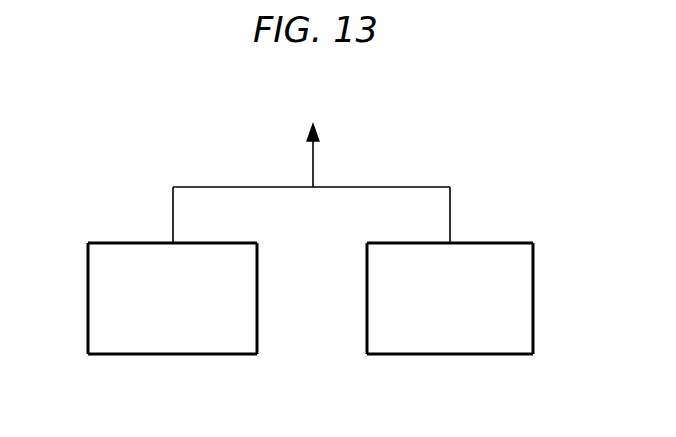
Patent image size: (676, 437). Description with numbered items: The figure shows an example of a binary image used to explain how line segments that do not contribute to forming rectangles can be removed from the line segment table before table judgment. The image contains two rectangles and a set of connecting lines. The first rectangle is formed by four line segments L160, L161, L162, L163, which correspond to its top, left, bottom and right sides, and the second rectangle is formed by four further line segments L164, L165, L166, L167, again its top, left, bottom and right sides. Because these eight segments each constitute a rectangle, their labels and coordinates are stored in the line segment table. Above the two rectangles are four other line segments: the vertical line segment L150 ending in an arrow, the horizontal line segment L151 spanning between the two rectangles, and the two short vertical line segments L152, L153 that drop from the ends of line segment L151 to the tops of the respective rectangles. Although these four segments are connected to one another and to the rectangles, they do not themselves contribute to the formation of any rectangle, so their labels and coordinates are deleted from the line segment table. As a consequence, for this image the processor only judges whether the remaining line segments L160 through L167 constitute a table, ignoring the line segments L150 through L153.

The line segment L150 is at (313, 171).
The line segment L151 is at (398, 187).
The line segment L152 is at (173, 210).
The line segment L153 is at (450, 207).
The line segment L160 is at (115, 243).
The line segment L161 is at (88, 305).
The line segment L162 is at (119, 355).
The line segment L163 is at (286, 266).
The line segment L164 is at (509, 243).
The line segment L165 is at (367, 318).
The line segment L166 is at (499, 355).
The line segment L167 is at (534, 298).